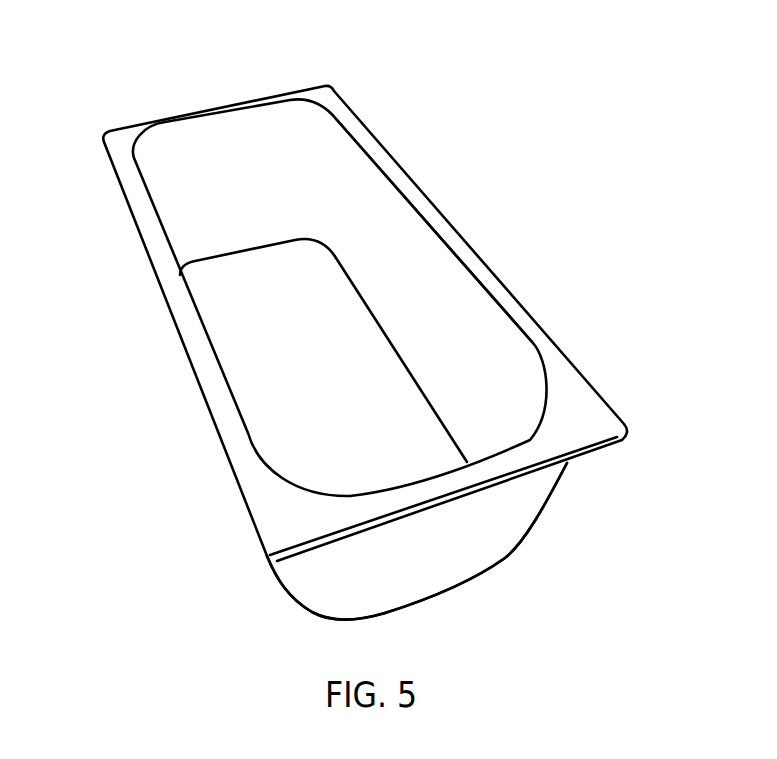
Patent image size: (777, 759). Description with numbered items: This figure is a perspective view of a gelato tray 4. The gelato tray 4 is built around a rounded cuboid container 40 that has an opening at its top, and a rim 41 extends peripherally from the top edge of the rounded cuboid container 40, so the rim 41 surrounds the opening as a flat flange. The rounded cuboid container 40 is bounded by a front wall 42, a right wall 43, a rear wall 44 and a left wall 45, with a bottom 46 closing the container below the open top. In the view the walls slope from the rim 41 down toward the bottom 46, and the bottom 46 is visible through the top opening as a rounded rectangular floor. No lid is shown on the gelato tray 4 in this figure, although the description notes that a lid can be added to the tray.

The gelato tray 4 is at (505, 207).
The rounded cuboid container 40 is at (273, 608).
The rim 41 is at (597, 418).
The front wall 42 is at (450, 553).
The right wall 43 is at (276, 585).
The rear wall 44 is at (214, 135).
The left wall 45 is at (483, 312).
The bottom 46 is at (230, 327).